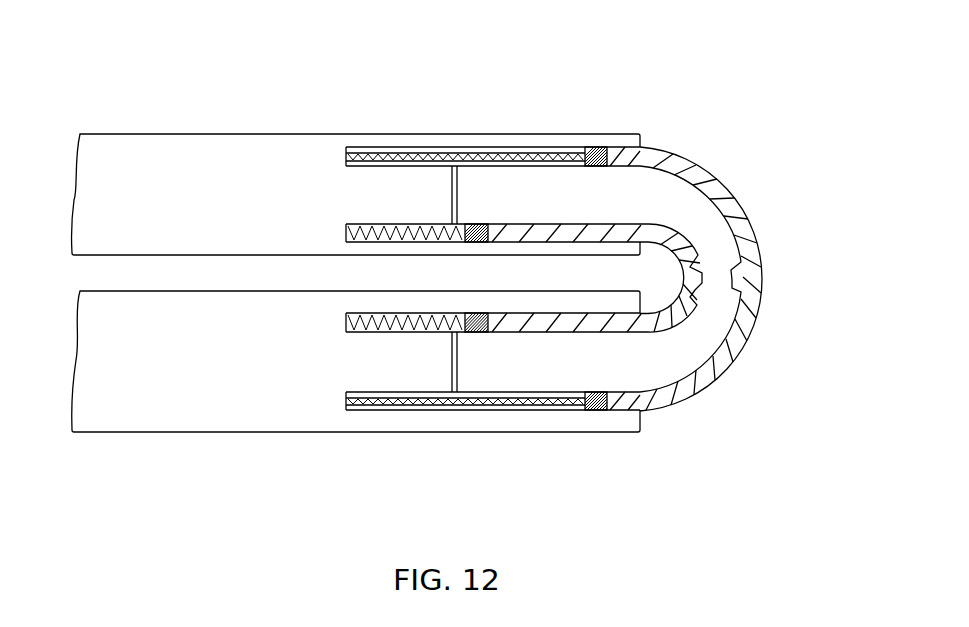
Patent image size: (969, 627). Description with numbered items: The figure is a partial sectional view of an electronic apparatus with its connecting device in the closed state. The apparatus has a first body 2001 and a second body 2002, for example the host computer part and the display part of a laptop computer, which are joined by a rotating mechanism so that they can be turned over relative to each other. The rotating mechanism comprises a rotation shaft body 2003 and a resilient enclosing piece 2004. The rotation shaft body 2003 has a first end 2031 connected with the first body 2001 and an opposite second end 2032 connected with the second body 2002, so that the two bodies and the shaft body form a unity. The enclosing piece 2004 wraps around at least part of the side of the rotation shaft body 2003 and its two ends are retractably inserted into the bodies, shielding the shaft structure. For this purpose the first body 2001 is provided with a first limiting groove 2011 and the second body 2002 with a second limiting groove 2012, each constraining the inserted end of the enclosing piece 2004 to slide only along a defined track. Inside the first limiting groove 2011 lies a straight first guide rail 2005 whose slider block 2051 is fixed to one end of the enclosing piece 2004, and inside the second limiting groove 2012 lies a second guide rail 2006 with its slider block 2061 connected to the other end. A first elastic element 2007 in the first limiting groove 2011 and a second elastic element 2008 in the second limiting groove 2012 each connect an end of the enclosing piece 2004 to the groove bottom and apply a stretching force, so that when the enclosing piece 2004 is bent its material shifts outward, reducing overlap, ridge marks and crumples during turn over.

The first body 2001 is at (185, 152).
The second body 2002 is at (172, 415).
The rotation shaft body 2003 is at (718, 242).
The enclosing piece 2004 is at (752, 320).
The first guide rail 2005 is at (418, 147).
The second guide rail 2006 is at (522, 400).
The first elastic element 2007 is at (362, 160).
The second elastic element 2008 is at (357, 415).
The first limiting groove 2011 is at (407, 147).
The second limiting groove 2012 is at (438, 410).
The first end 2031 is at (463, 200).
The second end 2032 is at (465, 363).
The slider block 2051 is at (595, 147).
The slider block 2061 is at (603, 408).